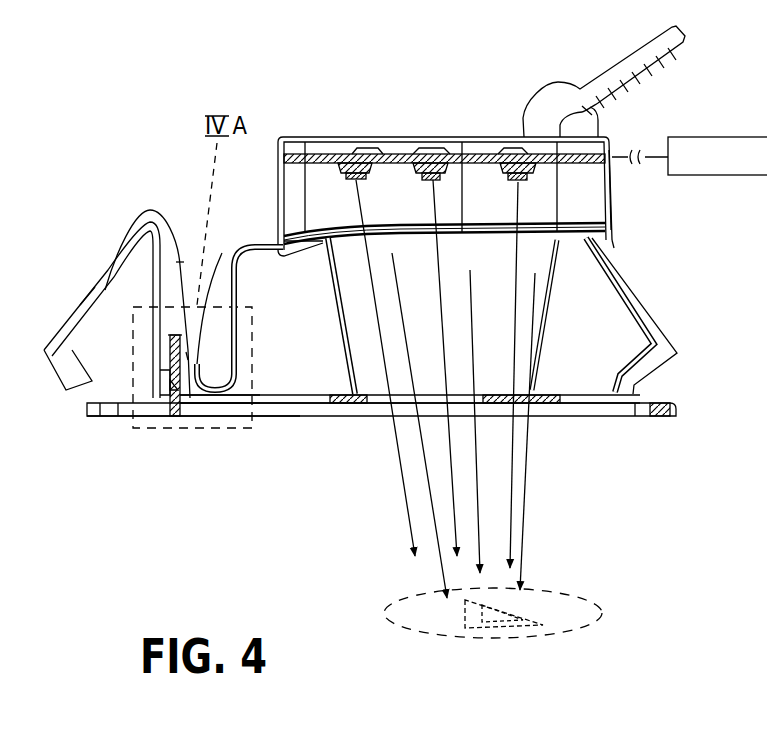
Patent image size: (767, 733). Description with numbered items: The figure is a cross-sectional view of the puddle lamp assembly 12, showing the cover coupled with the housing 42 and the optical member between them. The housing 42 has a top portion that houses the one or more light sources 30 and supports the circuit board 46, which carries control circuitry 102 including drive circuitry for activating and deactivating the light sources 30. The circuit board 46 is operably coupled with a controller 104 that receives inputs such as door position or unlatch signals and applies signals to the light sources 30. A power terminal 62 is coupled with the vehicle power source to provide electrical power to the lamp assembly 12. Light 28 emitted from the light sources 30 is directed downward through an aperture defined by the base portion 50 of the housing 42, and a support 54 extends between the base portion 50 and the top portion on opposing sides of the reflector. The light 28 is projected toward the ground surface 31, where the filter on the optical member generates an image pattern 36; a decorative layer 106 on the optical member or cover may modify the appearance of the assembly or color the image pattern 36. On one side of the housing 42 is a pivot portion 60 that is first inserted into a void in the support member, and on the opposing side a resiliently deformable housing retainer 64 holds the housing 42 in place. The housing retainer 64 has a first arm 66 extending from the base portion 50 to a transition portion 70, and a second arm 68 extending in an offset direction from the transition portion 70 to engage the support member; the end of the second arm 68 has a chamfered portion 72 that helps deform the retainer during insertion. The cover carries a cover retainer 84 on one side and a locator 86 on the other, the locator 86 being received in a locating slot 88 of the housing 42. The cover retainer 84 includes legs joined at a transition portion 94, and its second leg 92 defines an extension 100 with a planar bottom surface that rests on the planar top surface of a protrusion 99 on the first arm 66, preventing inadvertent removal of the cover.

The lamp assembly 12 is at (314, 130).
The light 28 is at (528, 476).
The light sources 30 is at (472, 168).
The ground surface 31 is at (635, 667).
The image pattern 36 is at (491, 633).
The housing 42 is at (612, 203).
The circuit board 46 is at (586, 155).
The base portion 50 is at (332, 408).
The support 54 is at (592, 294).
The pivot portion 60 is at (681, 356).
The power terminal 62 is at (614, 67).
The housing retainer 64 is at (131, 212).
The first arm 66 is at (182, 255).
The second arm 68 is at (103, 265).
The transition portion 70 is at (150, 219).
The chamfered portion 72 is at (59, 381).
The cover retainer 84 is at (198, 404).
The locator 86 is at (668, 420).
The locating slot 88 is at (642, 420).
The second leg 92 is at (147, 456).
The transition portion 94 is at (185, 349).
The protrusion 99 is at (163, 363).
The extension 100 is at (177, 382).
The control circuitry 102 is at (365, 133).
The controller 104 is at (700, 137).
The decorative layer 106 is at (124, 420).